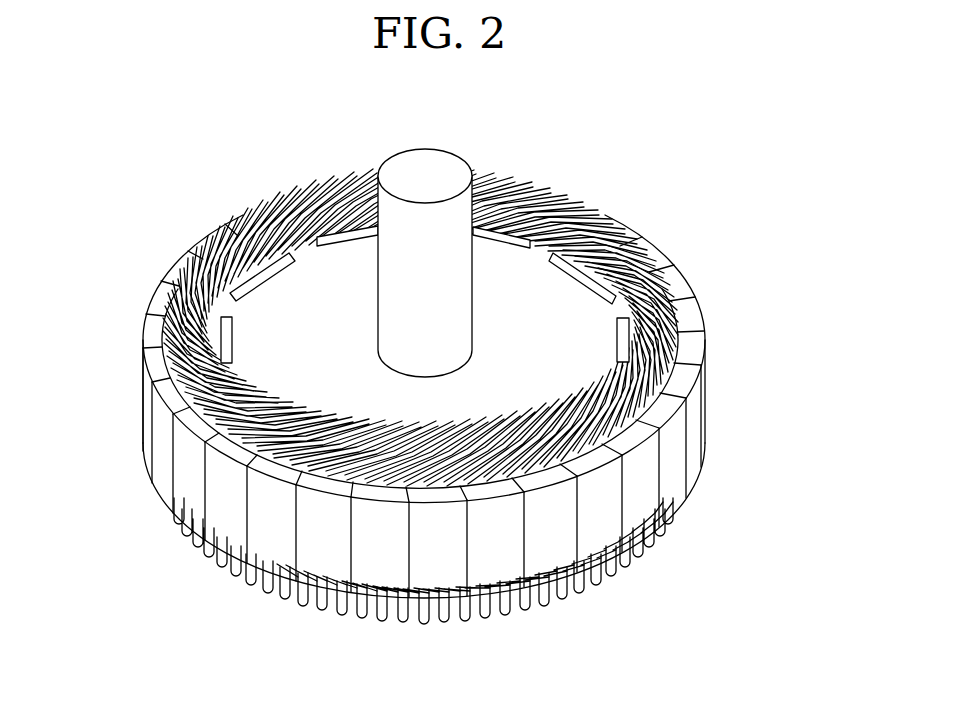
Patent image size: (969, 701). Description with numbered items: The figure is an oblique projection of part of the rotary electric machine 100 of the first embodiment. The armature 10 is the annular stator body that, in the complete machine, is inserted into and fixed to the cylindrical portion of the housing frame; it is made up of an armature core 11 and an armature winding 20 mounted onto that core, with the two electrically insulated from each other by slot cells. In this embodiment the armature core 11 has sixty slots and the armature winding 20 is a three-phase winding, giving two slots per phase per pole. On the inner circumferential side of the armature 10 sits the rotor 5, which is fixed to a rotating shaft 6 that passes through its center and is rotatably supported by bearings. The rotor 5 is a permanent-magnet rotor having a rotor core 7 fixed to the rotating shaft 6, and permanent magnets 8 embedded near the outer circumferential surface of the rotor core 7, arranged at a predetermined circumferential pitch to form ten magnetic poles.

The rotary electric machine 100 is at (131, 103).
The armature 10 is at (60, 291).
The armature core 11 is at (140, 362).
The armature winding 20 is at (165, 318).
The rotor 5 is at (540, 267).
The rotating shaft 6 is at (468, 188).
The rotor core 7 is at (637, 272).
The permanent magnets 8 is at (592, 320).